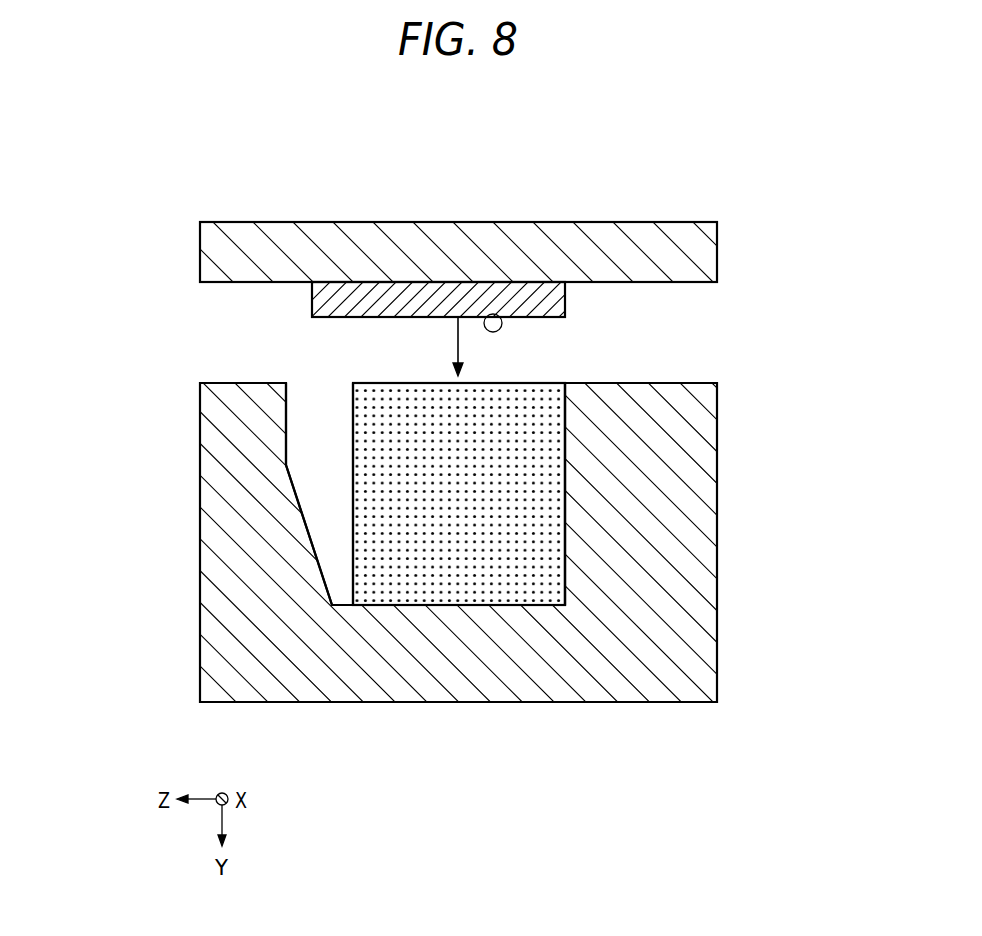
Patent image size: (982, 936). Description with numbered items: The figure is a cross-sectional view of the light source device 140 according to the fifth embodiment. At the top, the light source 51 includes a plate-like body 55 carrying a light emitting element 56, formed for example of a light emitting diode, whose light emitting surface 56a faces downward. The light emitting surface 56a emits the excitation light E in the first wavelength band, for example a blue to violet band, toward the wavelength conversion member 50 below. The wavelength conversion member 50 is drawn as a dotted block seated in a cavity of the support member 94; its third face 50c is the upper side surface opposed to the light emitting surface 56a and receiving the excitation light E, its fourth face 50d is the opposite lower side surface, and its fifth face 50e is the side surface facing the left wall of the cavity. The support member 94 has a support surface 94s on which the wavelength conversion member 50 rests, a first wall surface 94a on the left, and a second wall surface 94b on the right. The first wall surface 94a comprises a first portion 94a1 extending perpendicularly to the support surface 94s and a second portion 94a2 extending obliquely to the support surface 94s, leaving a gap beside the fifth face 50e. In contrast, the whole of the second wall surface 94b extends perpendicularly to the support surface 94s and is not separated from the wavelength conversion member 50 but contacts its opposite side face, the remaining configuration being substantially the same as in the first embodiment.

The light source device 140 is at (212, 196).
The light source 51 is at (688, 215).
The plate body 55 is at (637, 228).
The light emitting element 56 is at (442, 290).
The light emitting surface 56a is at (496, 314).
The excitation light E is at (462, 351).
The wavelength conversion member 50 is at (553, 441).
The third face 50c is at (535, 383).
The fourth face 50d is at (420, 606).
The fifth face 50e is at (353, 490).
The support member 94 is at (565, 496).
The first wall surface 94a is at (189, 499).
The first portion 94a1 is at (290, 432).
The second portion 94a2 is at (327, 602).
The second wall surface 94b is at (565, 548).
The support surface 94s is at (505, 604).